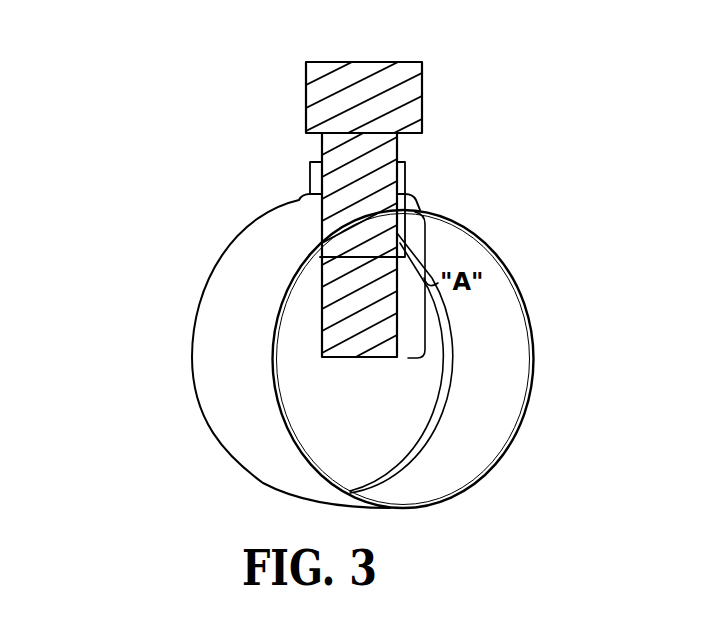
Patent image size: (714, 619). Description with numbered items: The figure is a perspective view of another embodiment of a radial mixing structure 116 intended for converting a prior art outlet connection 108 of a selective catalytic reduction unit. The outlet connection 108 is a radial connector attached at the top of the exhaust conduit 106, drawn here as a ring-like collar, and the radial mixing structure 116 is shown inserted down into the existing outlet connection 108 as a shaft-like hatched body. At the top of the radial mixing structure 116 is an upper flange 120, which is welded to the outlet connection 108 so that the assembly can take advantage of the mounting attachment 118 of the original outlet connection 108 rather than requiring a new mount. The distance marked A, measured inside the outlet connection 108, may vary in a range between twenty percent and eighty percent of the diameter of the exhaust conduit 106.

The exhaust conduit 106 is at (232, 382).
The outlet connection 108 is at (405, 175).
The radial mixing structure 116 is at (338, 297).
The mounting attachment 118 is at (412, 197).
The upper flange 120 is at (405, 100).